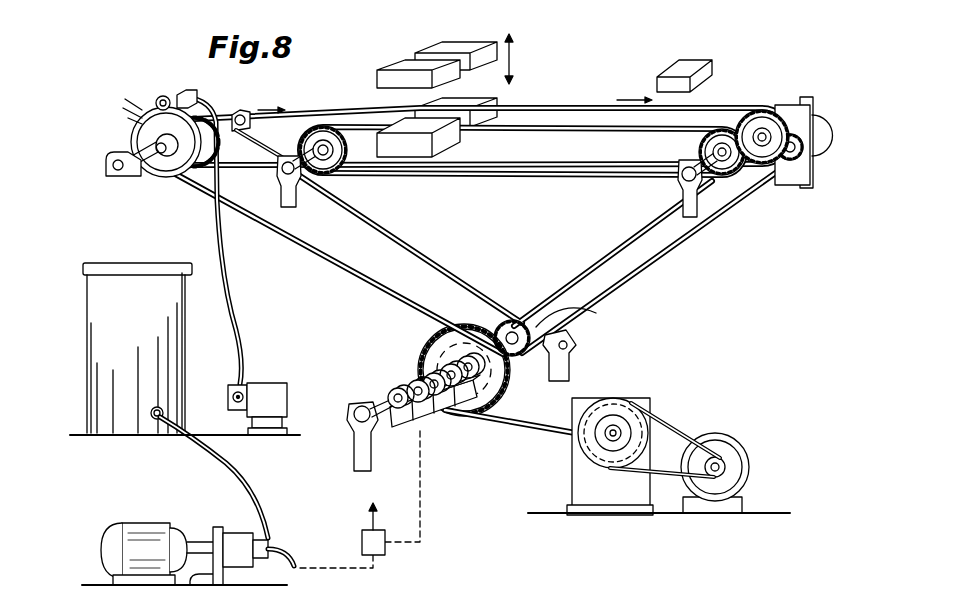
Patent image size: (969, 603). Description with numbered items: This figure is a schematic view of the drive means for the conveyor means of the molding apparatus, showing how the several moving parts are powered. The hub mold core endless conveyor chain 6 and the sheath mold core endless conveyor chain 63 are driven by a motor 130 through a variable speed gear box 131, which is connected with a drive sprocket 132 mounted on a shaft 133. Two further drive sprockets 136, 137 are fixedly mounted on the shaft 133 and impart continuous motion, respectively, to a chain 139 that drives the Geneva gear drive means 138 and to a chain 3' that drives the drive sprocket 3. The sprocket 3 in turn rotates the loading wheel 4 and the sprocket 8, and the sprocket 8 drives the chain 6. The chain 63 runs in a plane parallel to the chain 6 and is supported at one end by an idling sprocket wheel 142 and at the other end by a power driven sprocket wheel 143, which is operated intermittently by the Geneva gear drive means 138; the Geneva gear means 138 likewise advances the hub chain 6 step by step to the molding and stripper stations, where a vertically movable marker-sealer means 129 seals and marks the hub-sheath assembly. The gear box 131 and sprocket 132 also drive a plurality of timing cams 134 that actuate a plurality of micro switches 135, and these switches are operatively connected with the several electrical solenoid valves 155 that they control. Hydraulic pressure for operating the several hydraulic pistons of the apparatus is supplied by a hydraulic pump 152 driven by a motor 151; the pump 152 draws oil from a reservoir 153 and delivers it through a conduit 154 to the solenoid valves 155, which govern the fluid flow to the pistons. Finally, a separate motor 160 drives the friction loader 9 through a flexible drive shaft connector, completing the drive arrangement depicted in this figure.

The drive sprocket 3 is at (441, 262).
The chain 3' is at (258, 134).
The loading wheel 4 is at (170, 158).
The hub mold core endless conveyor chain 6 is at (311, 116).
The sprocket 8 is at (217, 160).
The friction loader 9 is at (167, 95).
The sheath mold core endless conveyor chain 63 is at (557, 129).
The marker-sealer means 129 is at (703, 62).
The motor 130 is at (717, 434).
The variable speed gear box 131 is at (645, 398).
The drive sprocket 132 is at (457, 338).
The shaft 133 is at (392, 391).
The timing cams 134 is at (458, 362).
The micro switches 135 is at (433, 420).
The drive sprocket 136 is at (513, 321).
The drive sprocket 137 is at (594, 312).
The Geneva gear drive means 138 is at (815, 109).
The chain 139 is at (718, 218).
The idling sprocket wheel 142 is at (345, 158).
The power driven sprocket wheel 143 is at (700, 140).
The motor 151 is at (140, 537).
The hydraulic pump 152 is at (218, 527).
The reservoir 153 is at (117, 296).
The conduit 154 is at (289, 560).
The solenoid valves 155 is at (385, 551).
The motor 160 is at (268, 394).